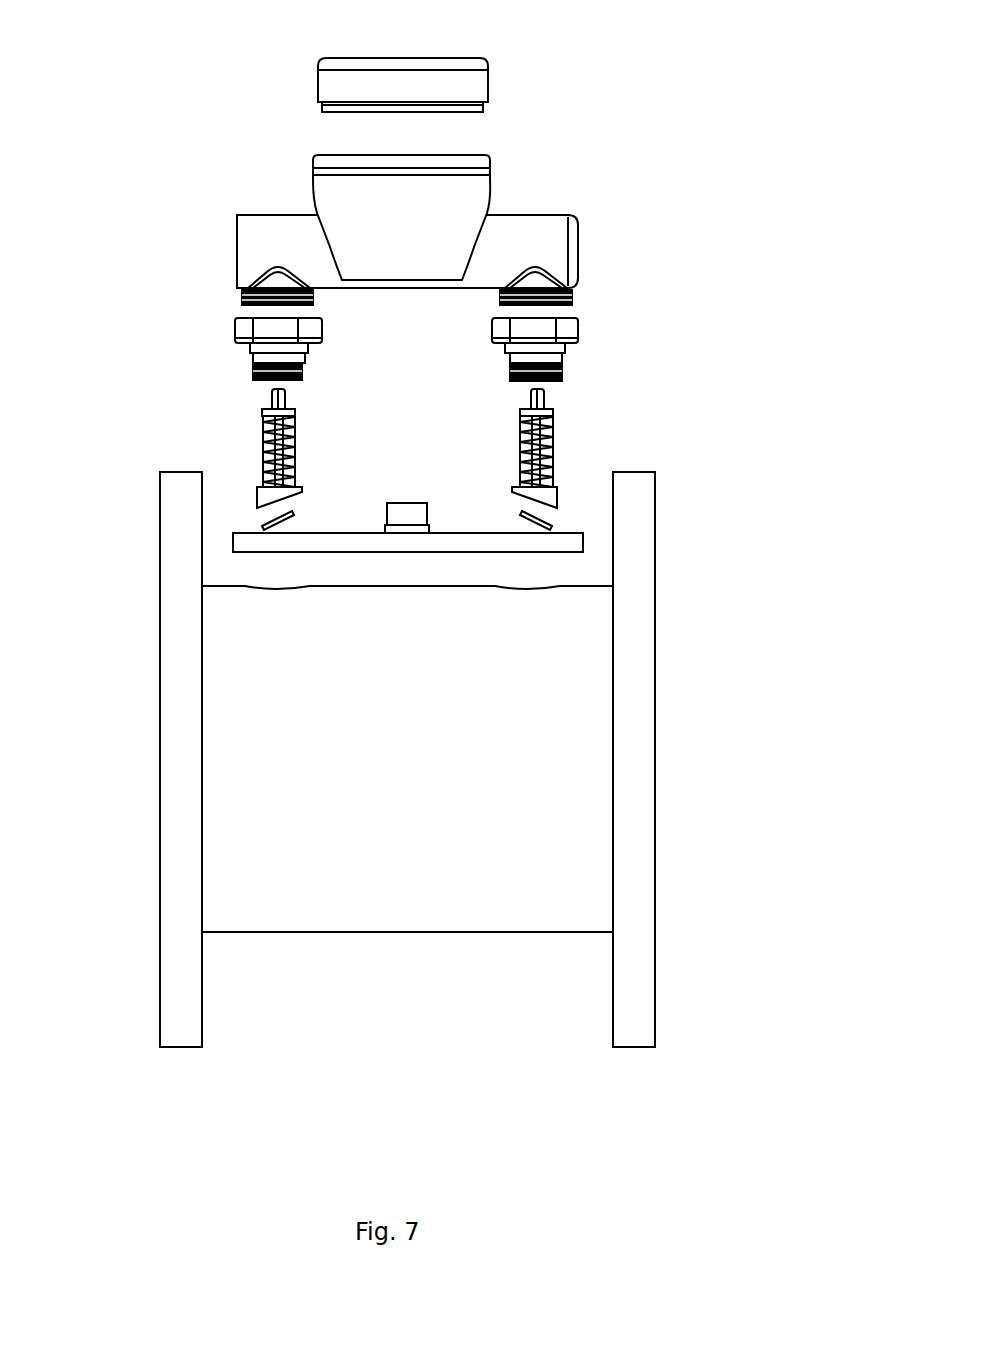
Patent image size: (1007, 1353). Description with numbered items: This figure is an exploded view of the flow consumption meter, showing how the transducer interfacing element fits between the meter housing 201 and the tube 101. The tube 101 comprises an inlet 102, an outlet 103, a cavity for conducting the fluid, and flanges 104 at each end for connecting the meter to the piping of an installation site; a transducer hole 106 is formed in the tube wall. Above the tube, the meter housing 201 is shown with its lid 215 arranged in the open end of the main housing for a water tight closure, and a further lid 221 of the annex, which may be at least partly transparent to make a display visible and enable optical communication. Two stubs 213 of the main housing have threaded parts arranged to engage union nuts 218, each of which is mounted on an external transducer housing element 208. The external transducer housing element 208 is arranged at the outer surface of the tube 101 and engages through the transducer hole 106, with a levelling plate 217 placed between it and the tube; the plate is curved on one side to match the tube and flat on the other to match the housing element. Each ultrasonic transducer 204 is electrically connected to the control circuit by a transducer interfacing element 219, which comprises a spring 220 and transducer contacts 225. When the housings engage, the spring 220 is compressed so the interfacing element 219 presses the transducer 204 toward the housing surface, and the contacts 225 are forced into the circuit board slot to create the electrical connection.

The tube 101 is at (420, 866).
The inlet 102 is at (143, 748).
The outlet 103 is at (667, 761).
The flanges 104 is at (629, 1014).
The transducer hole 106 is at (277, 590).
The meter housing 201 is at (428, 227).
The ultrasonic transducer 204 is at (535, 522).
The external transducer housing element 208 is at (537, 353).
The stubs 213 is at (543, 287).
The lid 215 is at (570, 248).
The levelling plate 217 is at (445, 543).
The union nut 218 is at (538, 330).
The transducer interfacing element 219 is at (512, 447).
The spring 220 is at (552, 447).
The lid 221 is at (455, 84).
The transducer contacts 225 is at (538, 398).